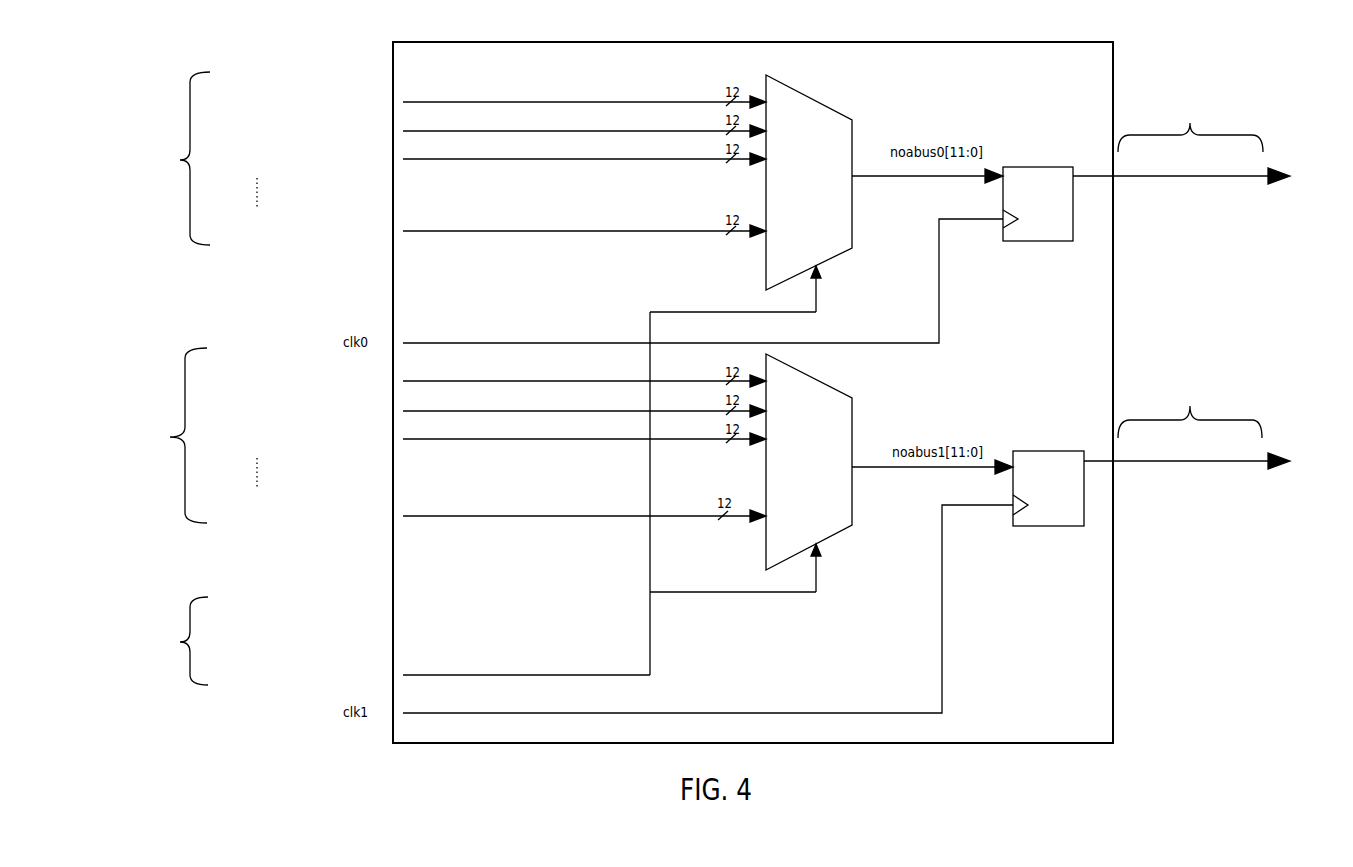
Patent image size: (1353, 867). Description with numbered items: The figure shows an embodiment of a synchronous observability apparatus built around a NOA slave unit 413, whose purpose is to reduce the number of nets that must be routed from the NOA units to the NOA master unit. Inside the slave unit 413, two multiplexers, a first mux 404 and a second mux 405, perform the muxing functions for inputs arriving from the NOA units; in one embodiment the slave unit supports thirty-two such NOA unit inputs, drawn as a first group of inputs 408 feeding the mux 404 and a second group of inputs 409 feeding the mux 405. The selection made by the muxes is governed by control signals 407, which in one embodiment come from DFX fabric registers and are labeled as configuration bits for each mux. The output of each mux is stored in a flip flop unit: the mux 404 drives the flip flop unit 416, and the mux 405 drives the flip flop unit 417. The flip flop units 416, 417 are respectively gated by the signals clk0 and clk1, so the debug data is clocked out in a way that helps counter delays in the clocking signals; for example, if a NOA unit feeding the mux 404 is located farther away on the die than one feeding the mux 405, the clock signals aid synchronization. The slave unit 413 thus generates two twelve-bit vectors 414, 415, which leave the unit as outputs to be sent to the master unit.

The mux 404 is at (825, 103).
The mux 405 is at (825, 382).
The control signals 407 is at (179, 642).
The NOA unit inputs 408 is at (179, 160).
The NOA unit inputs 409 is at (170, 437).
The NOA slave unit 413 is at (1080, 78).
The 12 bit vector 414 is at (1181, 141).
The 12 bit vector 415 is at (1187, 427).
The flip flop unit 416 is at (1037, 166).
The flip flop unit 417 is at (1045, 450).